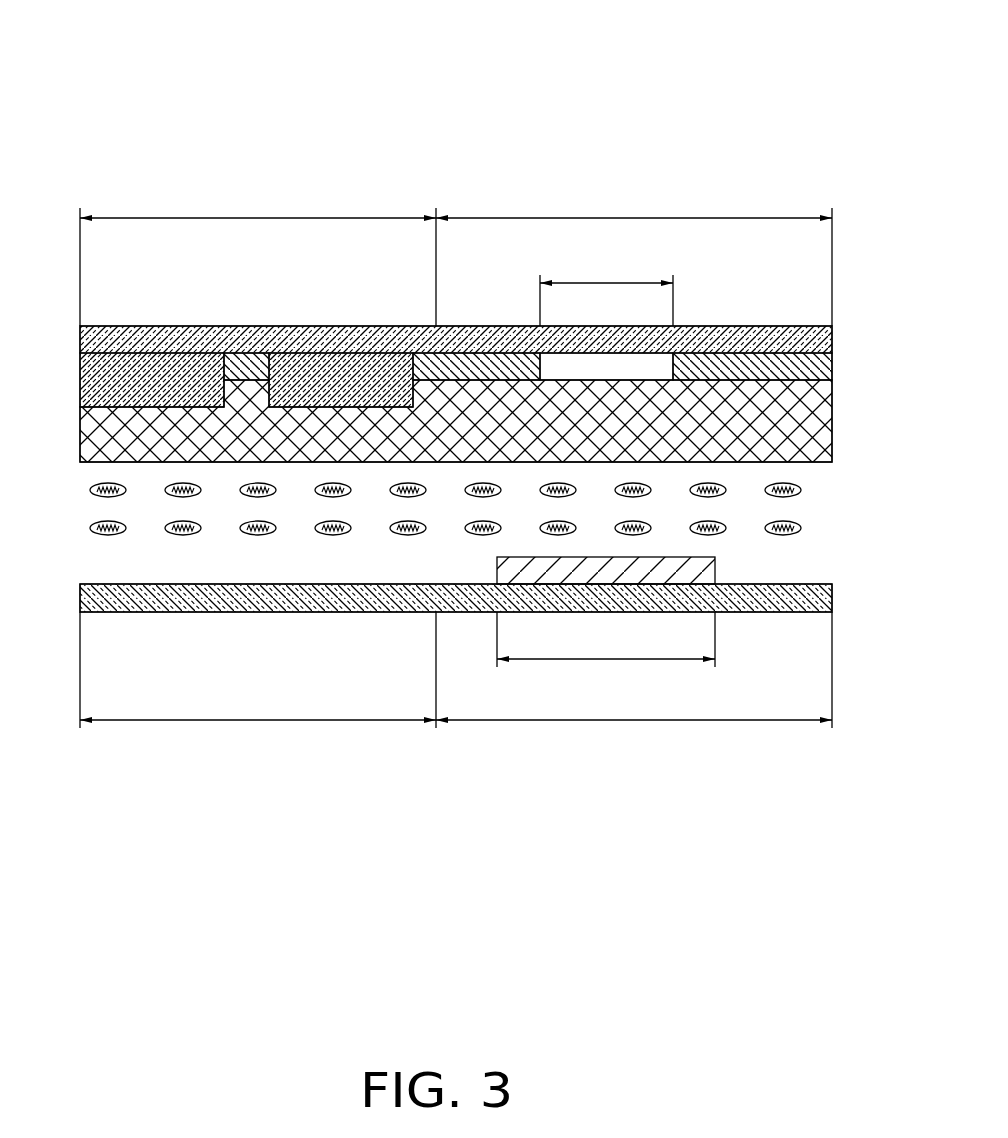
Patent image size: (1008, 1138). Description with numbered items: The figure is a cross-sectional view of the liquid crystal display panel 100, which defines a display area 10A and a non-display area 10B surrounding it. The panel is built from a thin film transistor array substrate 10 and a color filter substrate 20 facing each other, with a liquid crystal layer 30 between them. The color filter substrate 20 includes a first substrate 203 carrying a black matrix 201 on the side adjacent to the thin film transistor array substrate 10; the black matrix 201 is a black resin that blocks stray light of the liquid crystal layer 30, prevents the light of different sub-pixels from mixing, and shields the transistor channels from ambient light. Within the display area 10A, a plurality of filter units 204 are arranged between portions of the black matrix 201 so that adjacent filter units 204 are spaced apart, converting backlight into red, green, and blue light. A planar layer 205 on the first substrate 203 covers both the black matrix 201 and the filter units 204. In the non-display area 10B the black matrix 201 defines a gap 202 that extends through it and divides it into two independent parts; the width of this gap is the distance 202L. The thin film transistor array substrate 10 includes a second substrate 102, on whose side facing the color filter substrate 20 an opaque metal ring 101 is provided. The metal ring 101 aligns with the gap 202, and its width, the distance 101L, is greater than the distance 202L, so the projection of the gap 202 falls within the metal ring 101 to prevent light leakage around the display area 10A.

The liquid crystal display panel 100 is at (442, 41).
The thin film transistor array substrate 10 is at (843, 560).
The display area 10A is at (258, 470).
The non-display area 10B is at (634, 470).
The color filter substrate 20 is at (868, 294).
The liquid crystal layer 30 is at (66, 479).
The metal ring 101 is at (707, 565).
The distance 101L is at (606, 655).
The second substrate 102 is at (818, 603).
The black matrix 201 is at (258, 366).
The gap 202 is at (633, 365).
The distance 202L is at (606, 286).
The first substrate 203 is at (820, 336).
The filter units 204 is at (178, 364).
The planar layer 205 is at (820, 430).